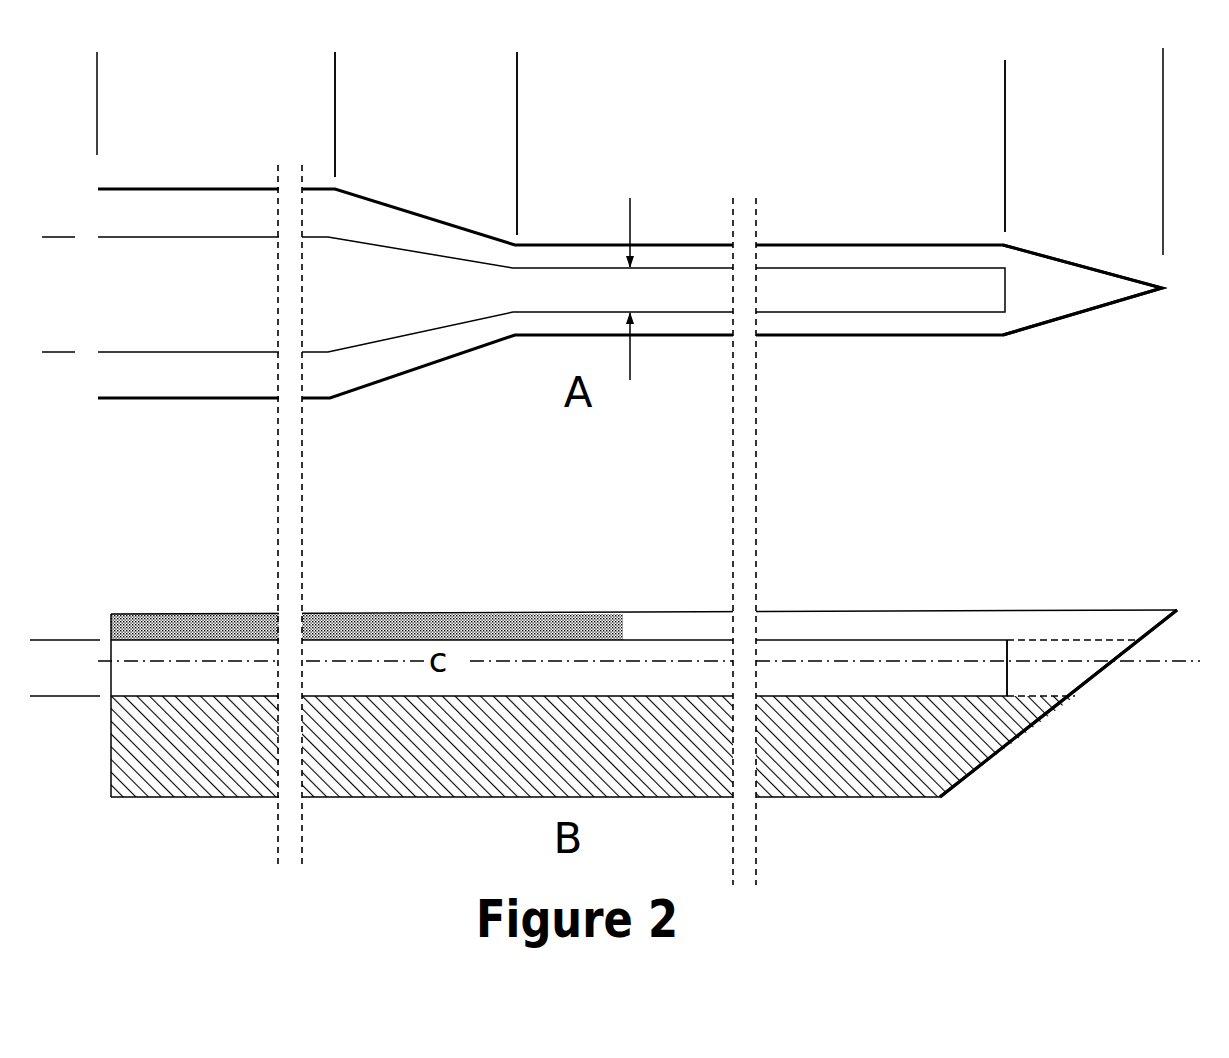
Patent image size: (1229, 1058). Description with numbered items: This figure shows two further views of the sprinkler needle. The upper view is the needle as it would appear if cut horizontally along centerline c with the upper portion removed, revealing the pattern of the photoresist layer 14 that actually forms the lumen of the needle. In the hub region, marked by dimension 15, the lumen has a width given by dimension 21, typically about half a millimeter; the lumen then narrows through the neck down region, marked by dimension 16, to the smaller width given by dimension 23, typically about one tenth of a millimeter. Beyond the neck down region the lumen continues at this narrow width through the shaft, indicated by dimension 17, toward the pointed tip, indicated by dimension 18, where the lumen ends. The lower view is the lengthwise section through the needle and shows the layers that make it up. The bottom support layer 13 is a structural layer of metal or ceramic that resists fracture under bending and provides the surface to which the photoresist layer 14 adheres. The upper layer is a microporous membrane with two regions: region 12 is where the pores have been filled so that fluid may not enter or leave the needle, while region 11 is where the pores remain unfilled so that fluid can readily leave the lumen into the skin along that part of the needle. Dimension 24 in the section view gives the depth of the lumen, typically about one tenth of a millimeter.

The microporous portion of upper layer 11 is at (1007, 625).
The non-microporous portion of upper layer 12 is at (442, 628).
The support layer 13 is at (360, 742).
The photoresist layer 14 is at (1052, 667).
The hub region dimension 15 is at (98, 98).
The neck down region dimension 16 is at (516, 98).
The distal section length 17 is at (518, 98).
The tip length 18 is at (1006, 98).
The lumen dimension in hub region 21 is at (53, 238).
The lumen dimension in neck down region 23 is at (627, 289).
The lumen depth dimension 24 is at (54, 582).